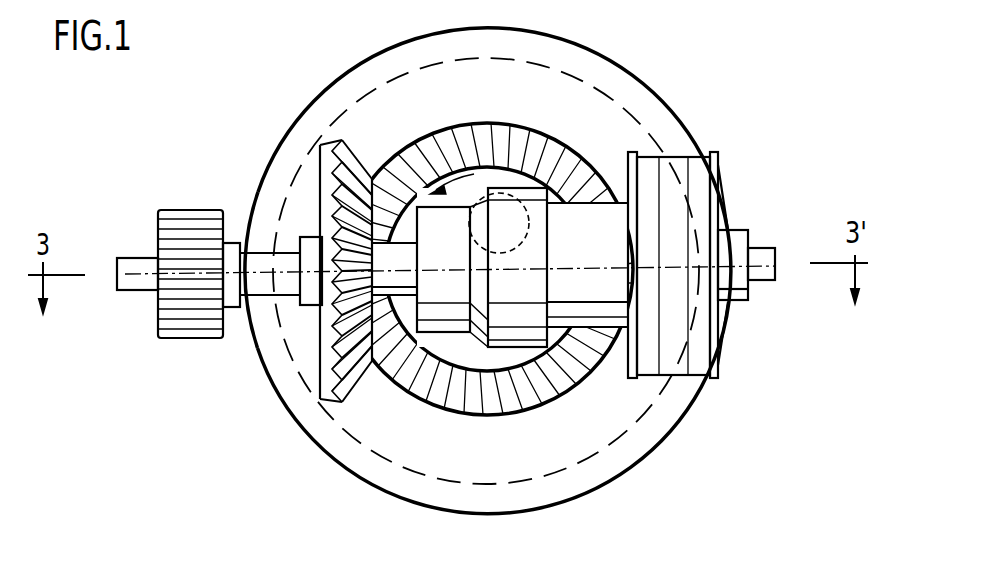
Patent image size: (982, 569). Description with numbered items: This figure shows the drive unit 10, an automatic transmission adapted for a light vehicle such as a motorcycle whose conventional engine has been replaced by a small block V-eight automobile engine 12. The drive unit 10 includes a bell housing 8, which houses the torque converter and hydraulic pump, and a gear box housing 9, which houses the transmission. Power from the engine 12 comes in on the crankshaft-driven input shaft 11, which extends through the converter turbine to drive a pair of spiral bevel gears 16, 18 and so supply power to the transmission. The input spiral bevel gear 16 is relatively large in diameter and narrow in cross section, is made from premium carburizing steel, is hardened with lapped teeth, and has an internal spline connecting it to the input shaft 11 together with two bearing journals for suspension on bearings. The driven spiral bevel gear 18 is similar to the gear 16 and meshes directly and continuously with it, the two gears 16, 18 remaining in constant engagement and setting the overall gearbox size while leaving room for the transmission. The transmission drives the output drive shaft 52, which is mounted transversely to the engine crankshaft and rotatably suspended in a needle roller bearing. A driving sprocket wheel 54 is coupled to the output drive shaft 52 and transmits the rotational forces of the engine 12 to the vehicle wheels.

The bell housing 8 is at (623, 440).
The gear box housing 9 is at (518, 189).
The drive unit 10 is at (492, 356).
The input shaft 11 is at (532, 248).
The engine 12 is at (295, 169).
The input spiral bevel gear 16 is at (457, 135).
The driven spiral bevel gear 18 is at (322, 377).
The output drive shaft 52 is at (257, 349).
The driving sprocket wheel 54 is at (158, 323).